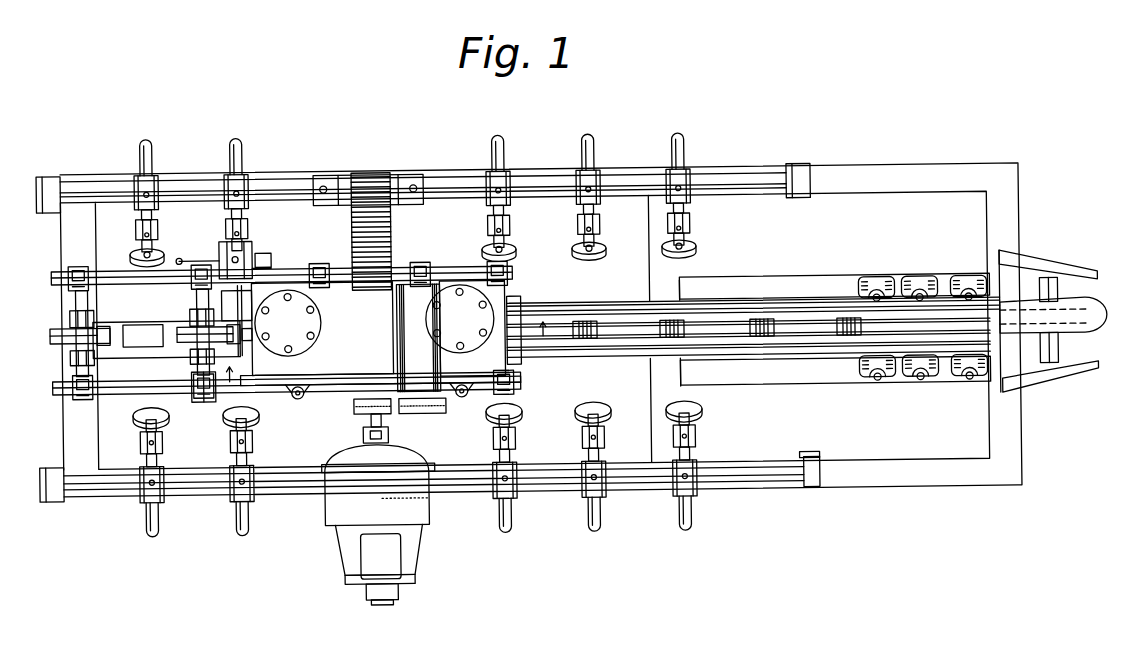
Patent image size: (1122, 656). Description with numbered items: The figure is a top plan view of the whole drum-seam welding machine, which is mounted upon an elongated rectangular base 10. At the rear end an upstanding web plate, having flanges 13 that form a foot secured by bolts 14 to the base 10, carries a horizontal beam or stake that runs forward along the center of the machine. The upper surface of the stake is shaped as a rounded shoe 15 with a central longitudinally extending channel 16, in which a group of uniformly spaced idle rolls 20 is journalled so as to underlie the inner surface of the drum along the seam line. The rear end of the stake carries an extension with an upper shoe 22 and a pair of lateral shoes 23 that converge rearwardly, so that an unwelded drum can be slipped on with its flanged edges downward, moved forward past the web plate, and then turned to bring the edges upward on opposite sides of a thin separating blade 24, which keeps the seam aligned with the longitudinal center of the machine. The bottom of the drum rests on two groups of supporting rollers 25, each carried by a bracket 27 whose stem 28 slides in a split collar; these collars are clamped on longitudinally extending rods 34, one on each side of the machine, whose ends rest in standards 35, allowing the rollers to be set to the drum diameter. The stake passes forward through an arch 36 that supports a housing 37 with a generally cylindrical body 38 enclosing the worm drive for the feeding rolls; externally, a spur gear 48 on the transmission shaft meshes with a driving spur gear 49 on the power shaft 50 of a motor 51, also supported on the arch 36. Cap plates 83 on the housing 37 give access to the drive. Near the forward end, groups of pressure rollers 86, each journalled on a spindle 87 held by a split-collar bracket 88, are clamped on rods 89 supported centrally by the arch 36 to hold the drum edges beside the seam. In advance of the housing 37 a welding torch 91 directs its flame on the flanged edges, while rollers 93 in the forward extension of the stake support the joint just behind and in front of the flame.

The base 10 is at (915, 170).
The flanges 13 is at (920, 292).
The bolts 14 is at (891, 264).
The rounded shoe 15 is at (824, 303).
The channel 16 is at (742, 322).
The idle rolls 20 is at (847, 329).
The upper shoe 22 is at (1084, 322).
The lateral shoes 23 is at (1040, 262).
The separating blade 24 is at (623, 331).
The supporting rollers 25 is at (130, 250).
The bracket 27 is at (604, 437).
The stem 28 is at (156, 153).
The rod 34 is at (613, 182).
The standards 35 is at (56, 170).
The arch 36 is at (386, 239).
The housing 37 is at (379, 340).
The body 38 is at (512, 368).
The spur gear 48 is at (443, 405).
The driving spur gear 49 is at (372, 398).
The power shaft 50 is at (364, 432).
The motor 51 is at (378, 524).
The cap plates 83 is at (374, 320).
The pressure rollers 86 is at (236, 320).
The spindle 87 is at (205, 278).
The bracket 88 is at (203, 400).
The rods 89 is at (445, 264).
The welding torch 91 is at (188, 323).
The rollers 93 is at (56, 331).